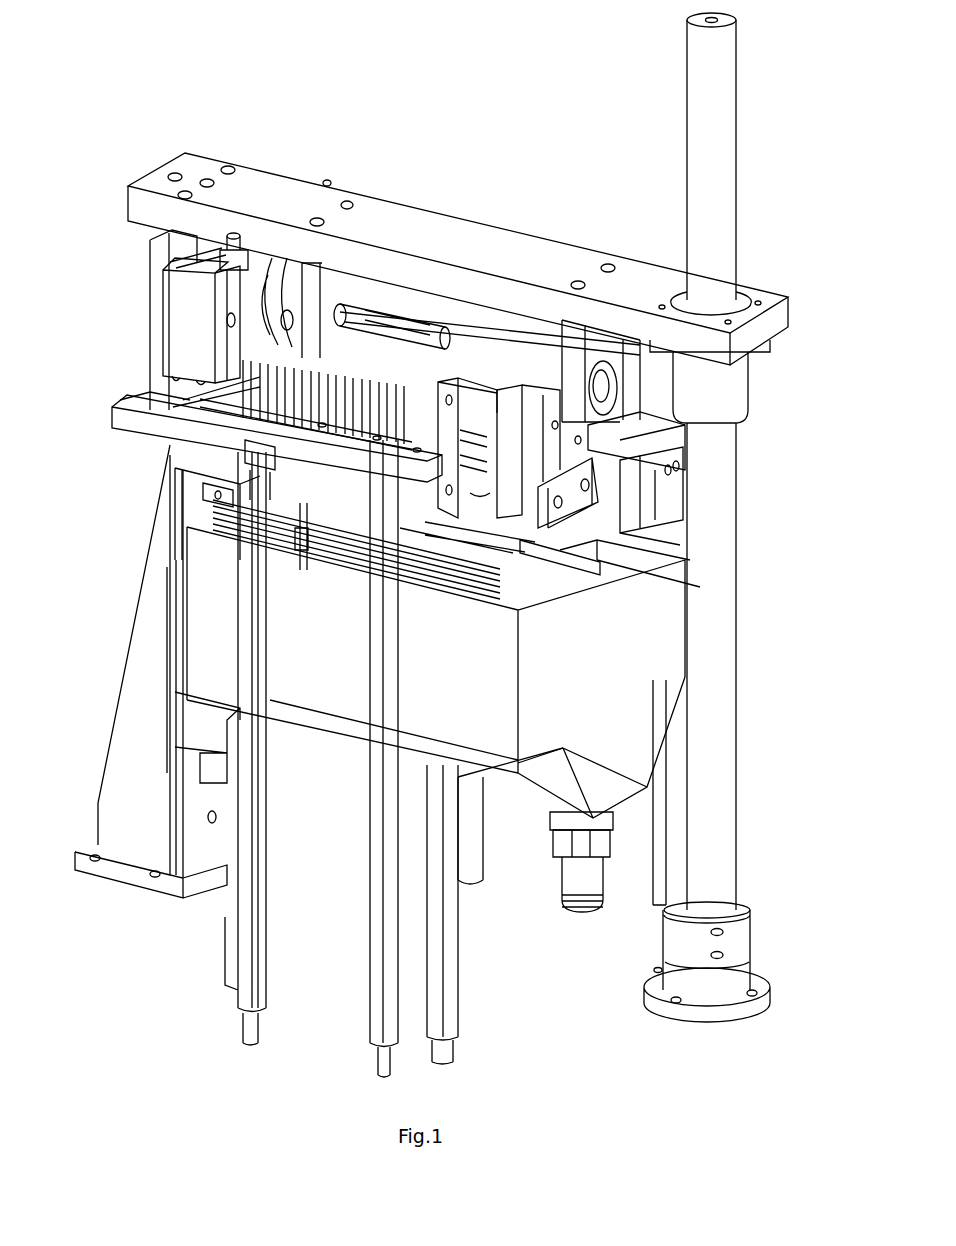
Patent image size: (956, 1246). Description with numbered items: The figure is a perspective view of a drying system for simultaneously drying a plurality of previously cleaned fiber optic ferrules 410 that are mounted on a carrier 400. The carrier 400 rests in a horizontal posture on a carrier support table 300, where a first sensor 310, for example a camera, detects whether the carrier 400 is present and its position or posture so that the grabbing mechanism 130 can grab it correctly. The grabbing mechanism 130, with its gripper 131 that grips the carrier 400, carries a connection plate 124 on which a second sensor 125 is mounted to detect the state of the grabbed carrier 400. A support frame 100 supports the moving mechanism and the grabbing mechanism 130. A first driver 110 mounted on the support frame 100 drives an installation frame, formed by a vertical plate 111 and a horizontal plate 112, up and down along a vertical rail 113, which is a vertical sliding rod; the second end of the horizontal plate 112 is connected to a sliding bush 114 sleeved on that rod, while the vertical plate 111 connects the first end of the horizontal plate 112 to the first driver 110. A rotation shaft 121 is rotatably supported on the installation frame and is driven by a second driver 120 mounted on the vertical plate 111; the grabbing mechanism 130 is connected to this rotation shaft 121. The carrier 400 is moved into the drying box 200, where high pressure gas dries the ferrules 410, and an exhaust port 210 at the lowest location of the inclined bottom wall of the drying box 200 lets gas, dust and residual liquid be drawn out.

The support frame 100 is at (152, 790).
The first driver 110 is at (190, 510).
The vertical plate 111 is at (150, 396).
The horizontal plate 112 is at (295, 203).
The vertical rail 113 is at (730, 840).
The sliding bush 114 is at (730, 388).
The second driver 120 is at (202, 327).
The rotation shaft 121 is at (438, 348).
The connection plate 124 is at (448, 422).
The second sensor 125 is at (480, 490).
The grabbing mechanism 130 is at (665, 448).
The gripper 131 is at (603, 540).
The drying box 200 is at (215, 590).
The exhaust port 210 is at (573, 867).
The carrier support table 300 is at (257, 448).
The first sensor 310 is at (597, 557).
The carrier 400 is at (217, 443).
The fiber optic ferrules 410 is at (187, 423).